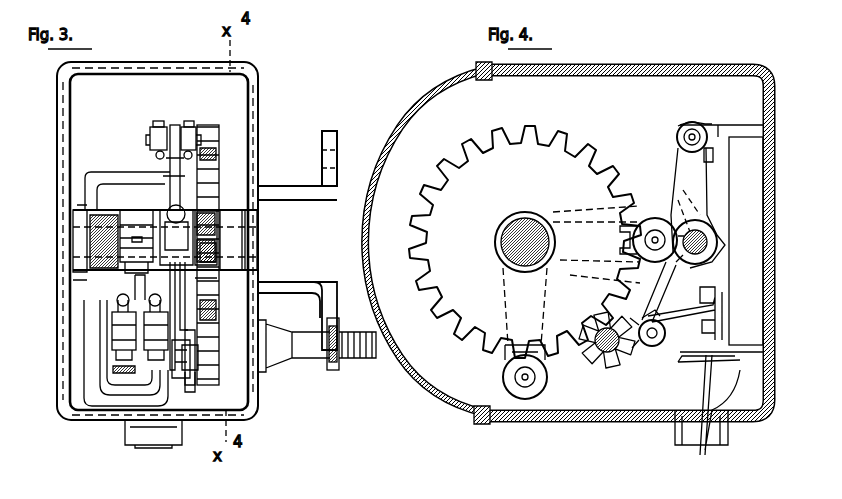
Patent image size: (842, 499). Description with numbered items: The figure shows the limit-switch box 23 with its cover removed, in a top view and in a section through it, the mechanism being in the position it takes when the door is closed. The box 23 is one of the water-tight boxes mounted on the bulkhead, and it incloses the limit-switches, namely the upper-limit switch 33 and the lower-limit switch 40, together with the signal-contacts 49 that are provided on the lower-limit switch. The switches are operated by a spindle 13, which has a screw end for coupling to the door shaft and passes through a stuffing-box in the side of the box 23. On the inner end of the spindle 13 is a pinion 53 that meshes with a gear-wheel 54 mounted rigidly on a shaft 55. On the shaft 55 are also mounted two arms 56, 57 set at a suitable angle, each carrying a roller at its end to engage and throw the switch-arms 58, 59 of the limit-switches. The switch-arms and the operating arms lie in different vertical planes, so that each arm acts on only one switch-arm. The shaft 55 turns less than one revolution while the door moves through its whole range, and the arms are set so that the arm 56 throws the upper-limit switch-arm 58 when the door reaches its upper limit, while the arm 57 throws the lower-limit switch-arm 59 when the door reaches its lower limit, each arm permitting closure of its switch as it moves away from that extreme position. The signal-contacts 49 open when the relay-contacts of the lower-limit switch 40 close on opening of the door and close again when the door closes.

In FIG. 3, the spindle 13 is at (357, 352).
In FIG. 3, the box 23 is at (259, 108).
In FIG. 4, the box 23 is at (684, 66).
In FIG. 3, the upper-limit switch 33 is at (157, 124).
In FIG. 4, the upper-limit switch 33 is at (692, 122).
In FIG. 3, the lower-limit switch 40 is at (160, 366).
In FIG. 4, the lower-limit switch 40 is at (686, 362).
In FIG. 3, the signal-contacts 49 is at (123, 304).
In FIG. 4, the signal-contacts 49 is at (650, 320).
In FIG. 3, the pinion 53 is at (218, 375).
In FIG. 4, the pinion 53 is at (630, 366).
In FIG. 3, the gear-wheel 54 is at (219, 178).
In FIG. 4, the gear-wheel 54 is at (429, 198).
In FIG. 4, the shaft 55 is at (505, 228).
In FIG. 3, the arm 56 is at (184, 320).
In FIG. 4, the arm 56 is at (536, 372).
In FIG. 3, the arm 57 is at (130, 212).
In FIG. 4, the arm 57 is at (634, 222).
In FIG. 3, the upper-limit switch-arm 58 is at (172, 178).
In FIG. 4, the upper-limit switch-arm 58 is at (705, 207).
In FIG. 3, the lower-limit switch-arm 59 is at (130, 193).
In FIG. 4, the lower-limit switch-arm 59 is at (697, 282).